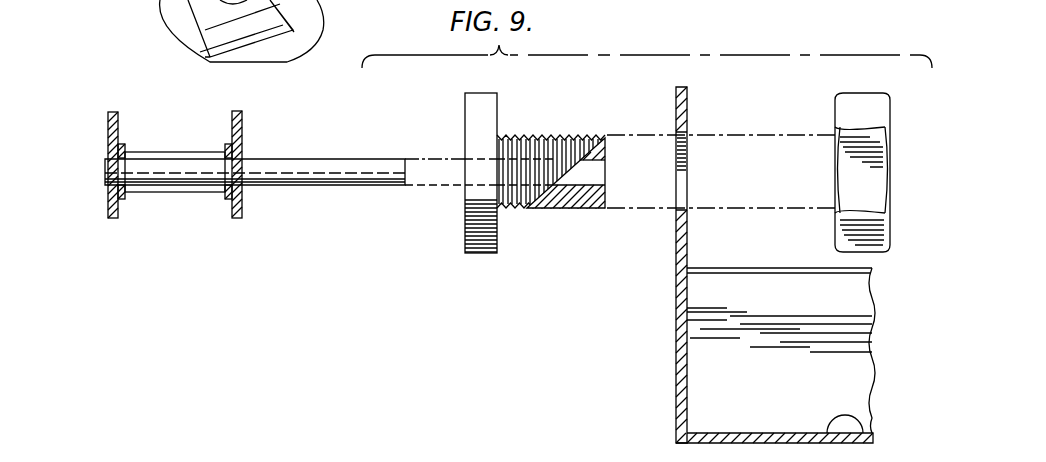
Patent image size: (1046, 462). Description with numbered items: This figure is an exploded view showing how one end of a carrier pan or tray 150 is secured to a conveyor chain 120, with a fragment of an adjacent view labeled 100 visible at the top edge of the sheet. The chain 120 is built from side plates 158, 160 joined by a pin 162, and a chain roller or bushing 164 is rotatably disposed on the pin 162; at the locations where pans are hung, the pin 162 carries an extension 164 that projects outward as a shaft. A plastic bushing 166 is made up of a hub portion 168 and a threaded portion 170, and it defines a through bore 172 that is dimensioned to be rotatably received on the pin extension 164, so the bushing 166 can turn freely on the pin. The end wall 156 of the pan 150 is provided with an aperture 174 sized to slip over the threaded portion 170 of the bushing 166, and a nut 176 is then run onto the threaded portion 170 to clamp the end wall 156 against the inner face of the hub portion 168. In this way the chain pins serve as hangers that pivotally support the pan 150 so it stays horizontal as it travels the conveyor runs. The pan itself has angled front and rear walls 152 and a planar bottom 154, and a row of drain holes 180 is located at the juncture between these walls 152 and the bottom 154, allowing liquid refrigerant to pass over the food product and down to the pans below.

The trailer hitch assembly 100 is at (183, 2).
The chain 120 is at (133, 112).
The tray 150 is at (243, 122).
The front and rear walls 152 is at (802, 314).
The bottom 154 is at (750, 433).
The sidewall 156 is at (676, 318).
The side plate 158 is at (108, 128).
The side plate 160 is at (116, 210).
The pin 162 is at (247, 153).
The chain roller 164 is at (174, 152).
The plastic bushing 166 is at (512, 132).
The hub portion 168 is at (485, 93).
The threaded portion 170 is at (538, 208).
The through bore 172 is at (583, 173).
The aperture 174 is at (687, 170).
The nut 176 is at (876, 91).
The drain holes 180 is at (847, 422).